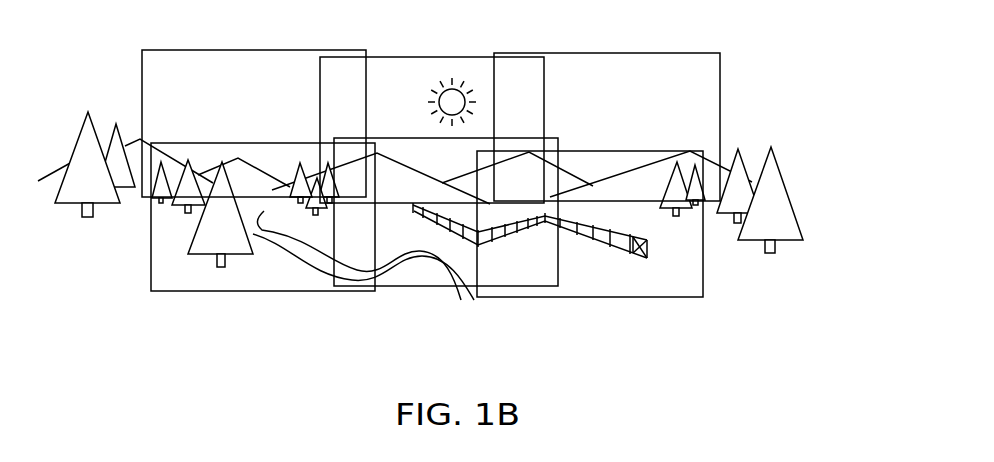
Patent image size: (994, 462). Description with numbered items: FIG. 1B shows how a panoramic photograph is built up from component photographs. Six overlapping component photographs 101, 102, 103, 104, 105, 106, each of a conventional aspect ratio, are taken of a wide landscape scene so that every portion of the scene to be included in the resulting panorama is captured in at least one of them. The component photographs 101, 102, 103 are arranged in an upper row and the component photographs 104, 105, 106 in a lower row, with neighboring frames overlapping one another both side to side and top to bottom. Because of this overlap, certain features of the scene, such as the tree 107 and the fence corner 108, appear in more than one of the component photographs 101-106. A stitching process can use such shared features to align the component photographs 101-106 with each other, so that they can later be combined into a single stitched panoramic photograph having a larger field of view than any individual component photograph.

The component photograph 101 is at (148, 49).
The component photograph 102 is at (465, 56).
The component photograph 103 is at (665, 53).
The component photograph 104 is at (267, 293).
The component photograph 105 is at (422, 287).
The component photograph 106 is at (620, 300).
The tree 107 is at (300, 165).
The fence corner 108 is at (543, 222).